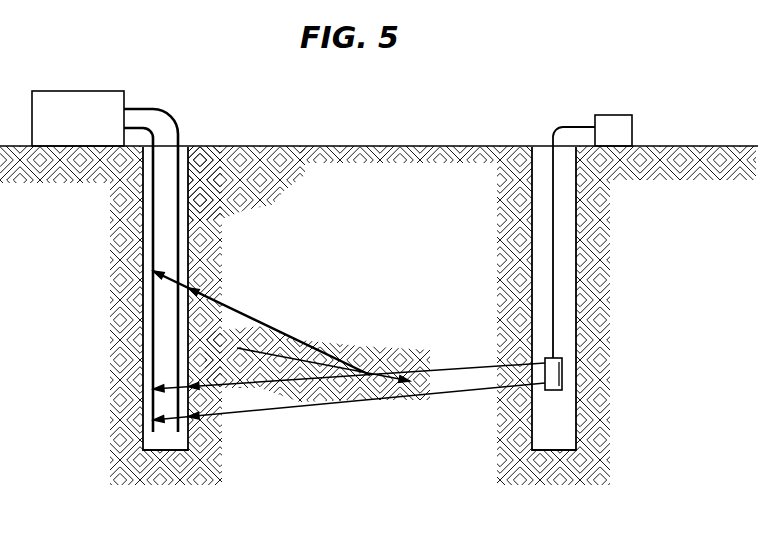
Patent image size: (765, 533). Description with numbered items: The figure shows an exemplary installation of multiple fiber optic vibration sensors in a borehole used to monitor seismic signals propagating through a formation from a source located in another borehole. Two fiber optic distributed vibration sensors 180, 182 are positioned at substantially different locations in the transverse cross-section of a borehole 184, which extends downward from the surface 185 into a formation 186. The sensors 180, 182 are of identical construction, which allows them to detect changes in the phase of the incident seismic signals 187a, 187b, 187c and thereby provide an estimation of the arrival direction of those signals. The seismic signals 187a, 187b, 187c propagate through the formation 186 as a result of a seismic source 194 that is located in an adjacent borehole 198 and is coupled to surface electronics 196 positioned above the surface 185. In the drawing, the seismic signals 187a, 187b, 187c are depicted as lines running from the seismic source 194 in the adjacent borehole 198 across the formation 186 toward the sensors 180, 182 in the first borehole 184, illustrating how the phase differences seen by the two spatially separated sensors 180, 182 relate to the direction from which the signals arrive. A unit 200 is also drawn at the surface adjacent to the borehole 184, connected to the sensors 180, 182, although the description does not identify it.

The fiber optic distributed vibration sensor 180 is at (180, 132).
The fiber optic distributed vibration sensor 182 is at (143, 128).
The borehole 184 is at (130, 321).
The surface 185 is at (392, 146).
The formation 186 is at (263, 202).
The seismic signal 187a is at (265, 325).
The seismic signal 187b is at (270, 383).
The seismic signal 187c is at (319, 405).
The seismic source 194 is at (562, 372).
The surface electronics 196 is at (613, 115).
The adjacent borehole 198 is at (590, 270).
The surface unit 200 is at (100, 127).